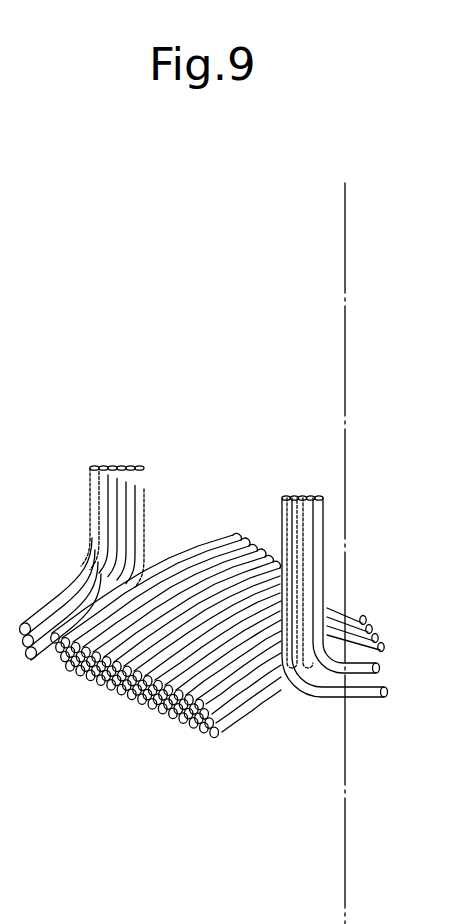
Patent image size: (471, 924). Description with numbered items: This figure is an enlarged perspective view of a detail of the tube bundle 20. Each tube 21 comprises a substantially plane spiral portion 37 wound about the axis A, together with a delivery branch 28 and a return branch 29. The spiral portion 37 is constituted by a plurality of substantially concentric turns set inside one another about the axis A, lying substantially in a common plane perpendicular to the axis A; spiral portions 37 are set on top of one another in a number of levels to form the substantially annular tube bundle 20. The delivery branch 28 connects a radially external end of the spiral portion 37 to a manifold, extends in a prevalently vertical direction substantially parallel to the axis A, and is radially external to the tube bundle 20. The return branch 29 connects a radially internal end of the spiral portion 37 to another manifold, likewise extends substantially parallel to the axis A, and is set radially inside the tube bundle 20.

The tube bundle 20 is at (173, 510).
The tube 21 is at (213, 530).
The delivery branch 28 is at (92, 500).
The return branch 29 is at (318, 537).
The spiral portion 37 is at (208, 678).
The axis A is at (342, 297).